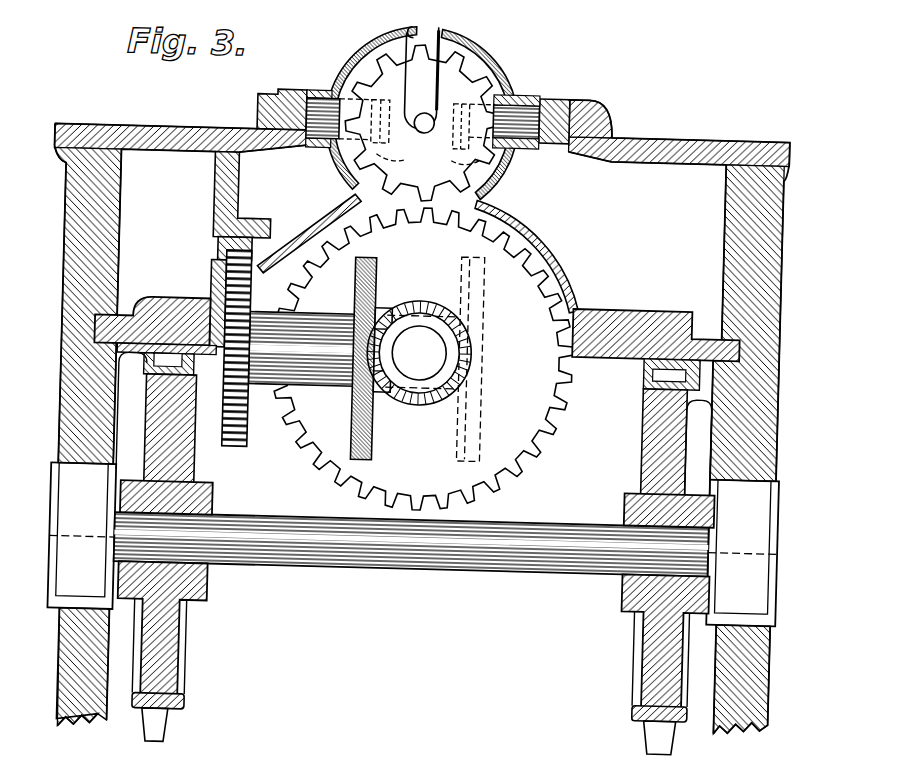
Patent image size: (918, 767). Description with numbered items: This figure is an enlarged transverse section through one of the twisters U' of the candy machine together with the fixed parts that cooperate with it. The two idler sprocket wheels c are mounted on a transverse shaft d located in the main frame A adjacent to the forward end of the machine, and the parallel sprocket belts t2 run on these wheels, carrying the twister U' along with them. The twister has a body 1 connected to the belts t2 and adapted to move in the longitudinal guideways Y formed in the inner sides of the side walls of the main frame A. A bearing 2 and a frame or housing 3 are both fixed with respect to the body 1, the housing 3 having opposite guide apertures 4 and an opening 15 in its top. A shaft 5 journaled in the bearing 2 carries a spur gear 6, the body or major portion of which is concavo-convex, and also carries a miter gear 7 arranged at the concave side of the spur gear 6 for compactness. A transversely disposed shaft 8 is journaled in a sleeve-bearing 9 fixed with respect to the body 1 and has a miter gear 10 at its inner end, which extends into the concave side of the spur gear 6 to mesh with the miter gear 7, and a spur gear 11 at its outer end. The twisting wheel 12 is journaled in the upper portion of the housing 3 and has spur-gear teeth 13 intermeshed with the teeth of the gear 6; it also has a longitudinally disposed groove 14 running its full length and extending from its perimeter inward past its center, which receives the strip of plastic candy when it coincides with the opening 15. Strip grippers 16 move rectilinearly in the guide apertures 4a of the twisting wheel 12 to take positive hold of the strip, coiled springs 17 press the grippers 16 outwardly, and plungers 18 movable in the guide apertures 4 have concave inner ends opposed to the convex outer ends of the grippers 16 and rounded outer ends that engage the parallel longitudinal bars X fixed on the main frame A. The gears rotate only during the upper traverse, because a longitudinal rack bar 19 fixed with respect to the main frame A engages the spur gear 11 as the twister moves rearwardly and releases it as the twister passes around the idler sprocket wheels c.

The main frame A is at (765, 437).
The body 1 is at (632, 310).
The bearing 2 is at (420, 328).
The frame or housing 3 is at (479, 52).
The guide apertures 4 is at (314, 95).
The guide apertures 4a is at (380, 165).
The shaft 5 is at (419, 352).
The spur gear 6 is at (422, 359).
The miter gear 7 is at (421, 407).
The transversely disposed shaft 8 is at (383, 310).
The sleeve-bearing 9 is at (314, 390).
The miter gear 10 is at (366, 458).
The spur gear 11 is at (234, 452).
The twisting wheel 12 is at (423, 123).
The spur-gear teeth 13 is at (499, 88).
The longitudinally disposed groove 14 is at (421, 80).
The opening 15 is at (452, 39).
The strip grippers 16 is at (356, 113).
The coiled springs 17 is at (452, 127).
The plungers 18 is at (558, 60).
The longitudinal rack bar 19 is at (278, 238).
The longitudinal bars X is at (283, 95).
The longitudinal guideways Y is at (125, 295).
The twister U' is at (540, 256).
The sprocket belts t2 is at (190, 372).
The idler sprocket wheels c is at (185, 665).
The transverse shaft d is at (462, 570).